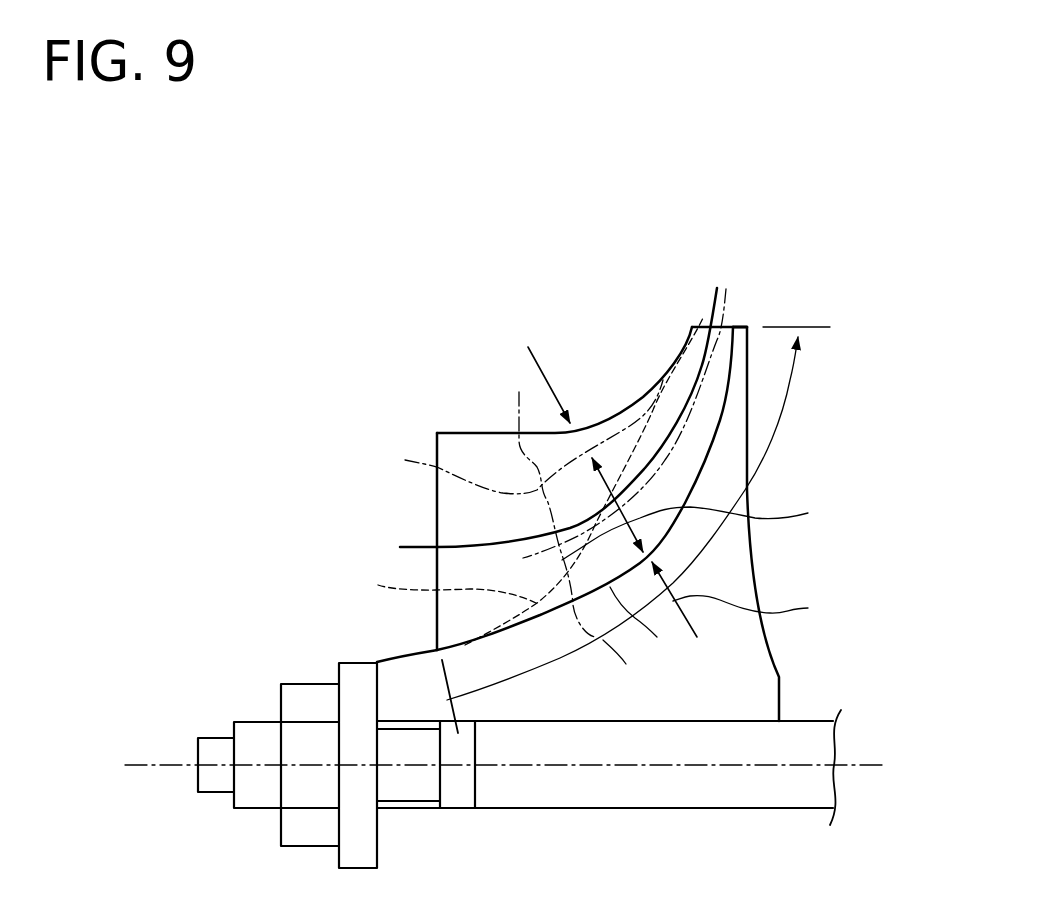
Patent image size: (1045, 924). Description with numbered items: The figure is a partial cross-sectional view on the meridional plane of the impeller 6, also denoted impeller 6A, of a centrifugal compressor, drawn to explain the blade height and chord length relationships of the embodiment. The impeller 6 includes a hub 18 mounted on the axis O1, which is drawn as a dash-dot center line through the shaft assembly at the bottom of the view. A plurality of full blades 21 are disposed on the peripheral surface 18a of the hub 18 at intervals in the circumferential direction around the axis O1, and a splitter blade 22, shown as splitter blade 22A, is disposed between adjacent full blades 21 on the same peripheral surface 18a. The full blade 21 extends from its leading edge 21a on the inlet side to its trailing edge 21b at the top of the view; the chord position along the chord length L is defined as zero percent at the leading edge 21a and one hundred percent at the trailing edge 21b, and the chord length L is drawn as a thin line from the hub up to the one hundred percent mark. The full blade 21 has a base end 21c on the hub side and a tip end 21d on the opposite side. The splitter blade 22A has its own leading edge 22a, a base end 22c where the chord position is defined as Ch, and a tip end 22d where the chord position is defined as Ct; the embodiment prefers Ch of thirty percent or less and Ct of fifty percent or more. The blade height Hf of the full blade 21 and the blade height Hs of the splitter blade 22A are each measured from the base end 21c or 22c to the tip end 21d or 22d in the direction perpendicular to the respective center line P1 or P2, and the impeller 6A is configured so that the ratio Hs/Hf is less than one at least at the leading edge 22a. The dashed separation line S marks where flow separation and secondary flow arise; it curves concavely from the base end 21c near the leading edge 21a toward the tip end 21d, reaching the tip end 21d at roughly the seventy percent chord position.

The impeller 6 is at (266, 446).
The impeller 6A is at (203, 308).
The hub 18 is at (538, 700).
The peripheral surface 18a is at (407, 657).
The full blade 21 is at (602, 481).
The leading edge 21a is at (437, 503).
The trailing edge 21b is at (735, 327).
The base end 21c is at (507, 628).
The tip end 21d is at (490, 432).
The splitter blade 22 is at (672, 392).
The splitter blade 22A is at (563, 466).
The leading edge 22a is at (510, 437).
The base end 22c is at (648, 625).
The tip end 22d is at (700, 347).
The axis O1 is at (485, 770).
The chord length L is at (785, 404).
The separation line S is at (444, 583).
The center line P1 is at (712, 303).
The center line P2 is at (728, 300).
The chord position at tip end Ct is at (547, 502).
The chord position at base end Ch is at (628, 666).
The blade height of splitter blade Hs is at (699, 530).
The blade height of full blade Hf is at (754, 609).